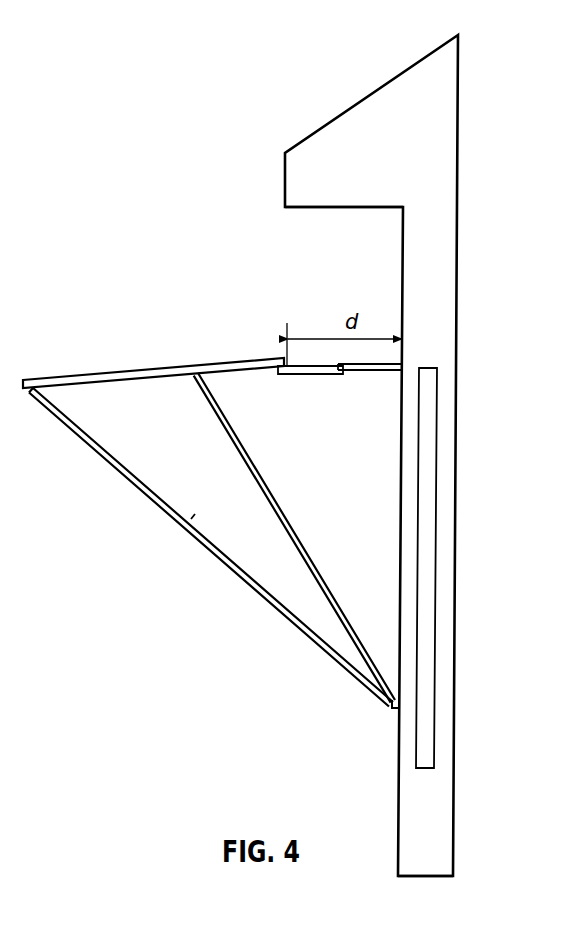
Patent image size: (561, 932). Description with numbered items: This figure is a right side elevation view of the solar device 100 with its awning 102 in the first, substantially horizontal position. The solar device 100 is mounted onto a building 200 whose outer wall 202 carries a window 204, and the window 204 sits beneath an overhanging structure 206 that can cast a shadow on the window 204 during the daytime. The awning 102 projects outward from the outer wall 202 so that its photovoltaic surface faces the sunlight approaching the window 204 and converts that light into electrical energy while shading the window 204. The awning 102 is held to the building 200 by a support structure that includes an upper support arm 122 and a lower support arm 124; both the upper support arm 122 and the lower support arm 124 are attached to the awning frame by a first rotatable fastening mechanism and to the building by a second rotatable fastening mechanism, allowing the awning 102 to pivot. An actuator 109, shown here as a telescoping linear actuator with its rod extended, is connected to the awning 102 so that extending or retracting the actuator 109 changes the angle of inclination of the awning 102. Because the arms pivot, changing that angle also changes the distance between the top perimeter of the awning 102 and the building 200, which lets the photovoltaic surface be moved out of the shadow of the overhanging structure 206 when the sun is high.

The solar device 100 is at (113, 276).
The awning 102 is at (167, 356).
The actuator 109 is at (222, 557).
The upper support arm 122 is at (338, 373).
The lower support arm 124 is at (289, 522).
The building 200 is at (461, 258).
The outer wall 202 is at (398, 808).
The window 204 is at (431, 576).
The overhanging structure 206 is at (305, 214).